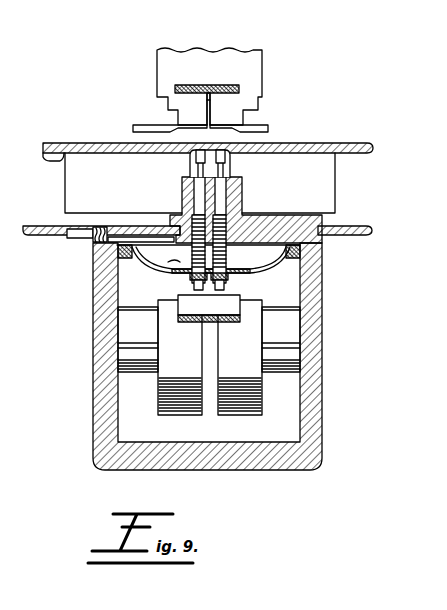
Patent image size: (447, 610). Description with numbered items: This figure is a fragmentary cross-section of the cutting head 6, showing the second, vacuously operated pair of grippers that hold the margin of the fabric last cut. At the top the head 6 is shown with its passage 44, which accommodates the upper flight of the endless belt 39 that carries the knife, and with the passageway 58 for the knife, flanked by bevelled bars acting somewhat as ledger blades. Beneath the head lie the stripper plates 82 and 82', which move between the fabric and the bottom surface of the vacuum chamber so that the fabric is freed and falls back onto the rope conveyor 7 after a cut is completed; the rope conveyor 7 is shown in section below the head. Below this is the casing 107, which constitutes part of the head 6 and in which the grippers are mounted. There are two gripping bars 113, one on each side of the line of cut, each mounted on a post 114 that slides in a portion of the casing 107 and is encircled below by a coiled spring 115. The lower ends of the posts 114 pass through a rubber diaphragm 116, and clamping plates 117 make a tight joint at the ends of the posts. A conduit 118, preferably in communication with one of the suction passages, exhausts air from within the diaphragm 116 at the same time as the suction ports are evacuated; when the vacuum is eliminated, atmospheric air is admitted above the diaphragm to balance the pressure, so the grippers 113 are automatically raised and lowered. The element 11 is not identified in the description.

The cutting head 6 is at (247, 61).
The passage 44 is at (183, 85).
The endless belt 39 is at (209, 85).
The passageway 58 is at (212, 108).
The stripper plate 82' is at (157, 120).
The stripper plate 82 is at (257, 120).
The rope conveyor 7 is at (357, 143).
The casing box 11 is at (328, 170).
The casing 107 is at (283, 226).
The gripping bars 113 is at (214, 160).
The post 114 is at (222, 189).
The coiled spring 115 is at (228, 254).
The rubber diaphragm 116 is at (260, 273).
The clamping plates 117 is at (172, 268).
The conduit 118 is at (80, 237).